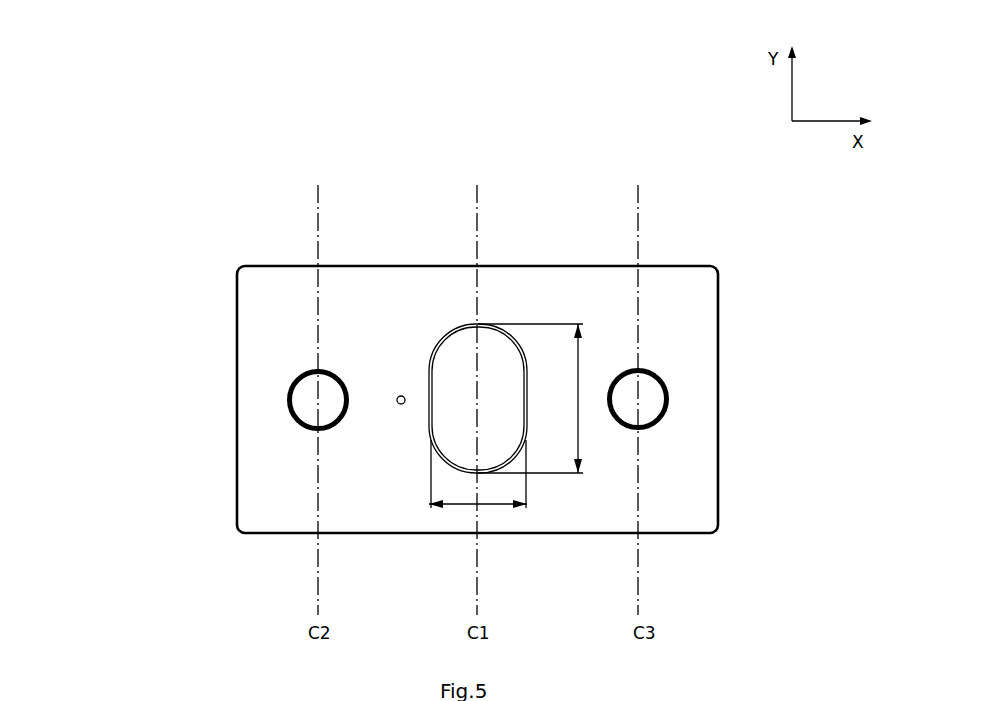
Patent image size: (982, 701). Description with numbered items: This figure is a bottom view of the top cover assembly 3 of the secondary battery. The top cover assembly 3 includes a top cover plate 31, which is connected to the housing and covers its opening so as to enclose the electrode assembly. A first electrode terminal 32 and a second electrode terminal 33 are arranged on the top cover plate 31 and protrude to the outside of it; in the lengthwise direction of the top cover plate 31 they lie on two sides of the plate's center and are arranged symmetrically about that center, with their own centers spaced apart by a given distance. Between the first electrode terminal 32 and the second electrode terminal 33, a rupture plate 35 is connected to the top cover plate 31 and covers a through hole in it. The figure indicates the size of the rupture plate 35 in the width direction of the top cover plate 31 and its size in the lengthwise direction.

The top cover assembly 3 is at (134, 160).
The top cover plate 31 is at (387, 280).
The first electrode terminal 32 is at (303, 403).
The second electrode terminal 33 is at (655, 393).
The rupture plate 35 is at (442, 367).